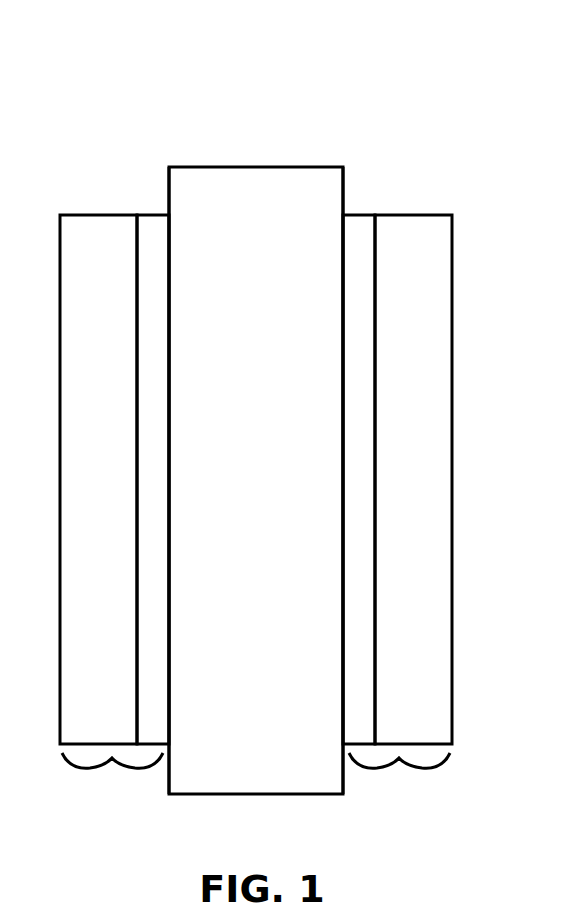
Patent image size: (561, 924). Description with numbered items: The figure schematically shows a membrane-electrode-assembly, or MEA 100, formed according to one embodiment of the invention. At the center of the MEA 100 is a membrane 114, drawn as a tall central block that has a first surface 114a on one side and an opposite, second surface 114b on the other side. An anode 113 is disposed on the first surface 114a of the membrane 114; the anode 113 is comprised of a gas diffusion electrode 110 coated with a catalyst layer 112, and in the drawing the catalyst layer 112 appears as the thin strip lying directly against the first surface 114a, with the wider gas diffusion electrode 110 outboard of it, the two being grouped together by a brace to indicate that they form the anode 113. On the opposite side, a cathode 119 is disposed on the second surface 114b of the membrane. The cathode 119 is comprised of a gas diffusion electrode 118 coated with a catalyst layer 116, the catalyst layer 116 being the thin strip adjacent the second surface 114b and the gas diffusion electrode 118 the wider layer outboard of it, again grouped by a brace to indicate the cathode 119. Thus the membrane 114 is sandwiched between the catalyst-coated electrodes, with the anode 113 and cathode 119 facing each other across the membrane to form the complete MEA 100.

The membrane-electrode-assembly 100 is at (227, 41).
The gas diffusion electrode 110 is at (75, 405).
The catalyst layer 112 is at (147, 213).
The anode 113 is at (112, 778).
The membrane 114 is at (230, 397).
The first surface 114a is at (168, 182).
The second surface 114b is at (344, 182).
The catalyst layer 116 is at (363, 213).
The gas diffusion electrode 118 is at (437, 405).
The cathode 119 is at (399, 778).